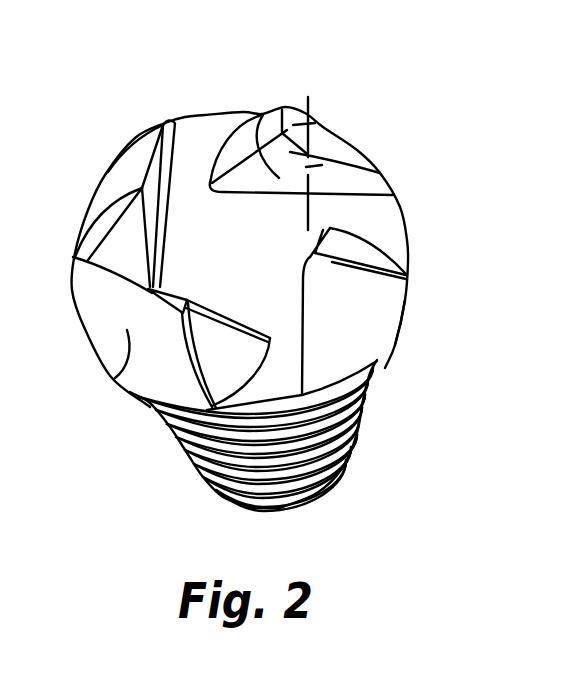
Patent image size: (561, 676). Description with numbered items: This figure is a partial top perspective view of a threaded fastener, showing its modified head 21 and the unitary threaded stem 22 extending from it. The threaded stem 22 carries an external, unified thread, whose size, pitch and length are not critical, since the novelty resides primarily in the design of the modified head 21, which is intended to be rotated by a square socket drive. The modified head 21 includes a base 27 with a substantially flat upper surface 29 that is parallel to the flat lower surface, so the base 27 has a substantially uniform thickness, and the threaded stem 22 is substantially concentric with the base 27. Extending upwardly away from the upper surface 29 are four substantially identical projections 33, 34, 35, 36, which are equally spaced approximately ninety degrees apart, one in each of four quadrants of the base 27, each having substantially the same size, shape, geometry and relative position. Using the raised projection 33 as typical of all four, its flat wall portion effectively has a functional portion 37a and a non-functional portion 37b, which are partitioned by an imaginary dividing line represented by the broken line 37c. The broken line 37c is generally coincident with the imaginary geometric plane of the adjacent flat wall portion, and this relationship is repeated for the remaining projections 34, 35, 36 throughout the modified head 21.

The modified head 21 is at (411, 247).
The threaded stem 22 is at (188, 443).
The base 27 is at (87, 278).
The upper surface 29 is at (196, 158).
The projection 33 is at (291, 150).
The projection 34 is at (358, 317).
The projection 35 is at (120, 375).
The projection 36 is at (118, 175).
The functional portion 37a is at (262, 114).
The non-functional portion 37b is at (388, 163).
The broken line 37c is at (310, 167).